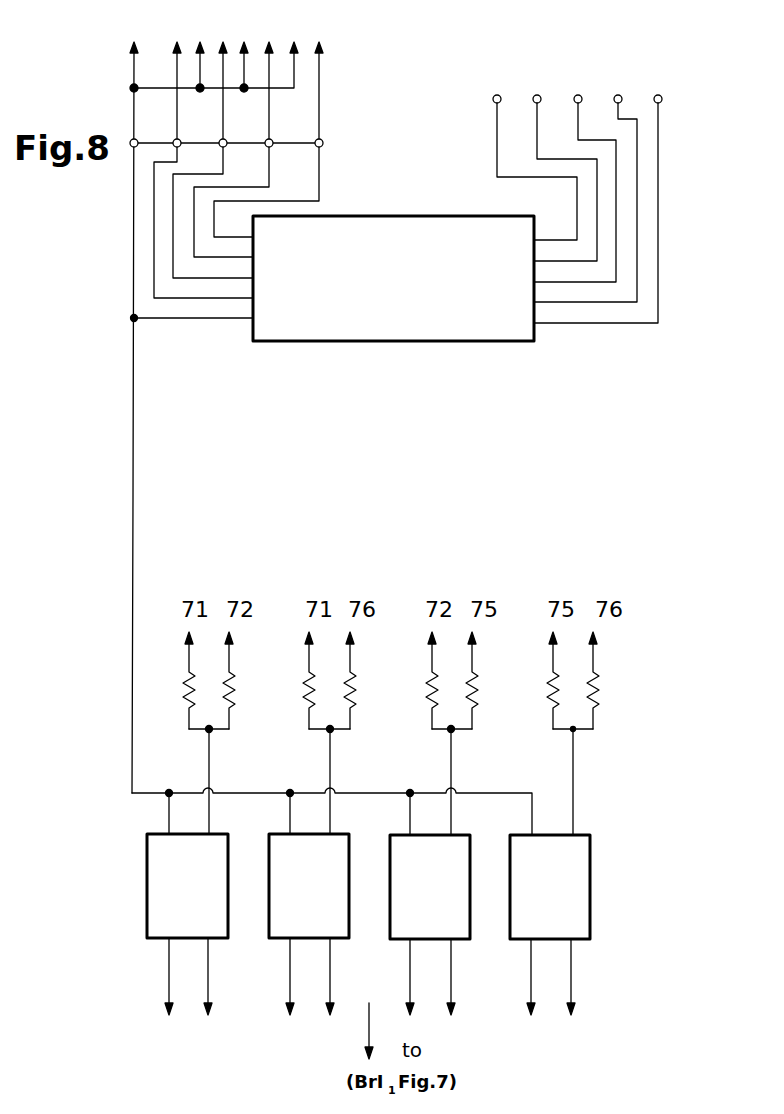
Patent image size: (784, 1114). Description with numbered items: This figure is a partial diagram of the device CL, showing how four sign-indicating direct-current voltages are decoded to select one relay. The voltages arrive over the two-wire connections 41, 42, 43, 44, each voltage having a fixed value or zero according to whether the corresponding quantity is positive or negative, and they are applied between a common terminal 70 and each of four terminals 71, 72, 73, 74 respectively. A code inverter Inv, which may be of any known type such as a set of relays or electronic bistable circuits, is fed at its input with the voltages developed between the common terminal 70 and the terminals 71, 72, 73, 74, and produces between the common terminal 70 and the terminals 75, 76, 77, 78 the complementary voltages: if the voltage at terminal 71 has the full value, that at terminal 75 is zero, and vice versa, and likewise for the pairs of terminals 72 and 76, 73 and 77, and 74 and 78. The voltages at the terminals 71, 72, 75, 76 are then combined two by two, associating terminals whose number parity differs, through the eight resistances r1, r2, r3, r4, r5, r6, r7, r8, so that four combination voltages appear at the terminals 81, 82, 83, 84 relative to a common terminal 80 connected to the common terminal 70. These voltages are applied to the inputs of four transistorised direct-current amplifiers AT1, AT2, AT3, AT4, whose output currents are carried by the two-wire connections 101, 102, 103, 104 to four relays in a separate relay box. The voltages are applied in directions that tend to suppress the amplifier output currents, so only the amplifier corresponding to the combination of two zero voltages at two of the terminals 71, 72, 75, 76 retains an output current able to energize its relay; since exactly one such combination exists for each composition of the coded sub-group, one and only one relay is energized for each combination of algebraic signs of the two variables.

The two-wire connection 41 is at (177, 68).
The two-wire connection 42 is at (232, 62).
The two-wire connection 43 is at (241, 80).
The two-wire connection 44 is at (294, 68).
The common terminal 70 is at (138, 138).
The terminal 71 is at (181, 138).
The terminal 72 is at (226, 147).
The terminal 73 is at (273, 138).
The terminal 74 is at (323, 145).
The terminal 75 is at (620, 95).
The terminal 76 is at (580, 95).
The terminal 77 is at (539, 95).
The terminal 78 is at (499, 95).
The common terminal 80 is at (167, 795).
The terminal 81 is at (212, 733).
The terminal 82 is at (333, 733).
The terminal 83 is at (454, 733).
The terminal 84 is at (576, 733).
The two-wire connection 101 is at (208, 958).
The two-wire connection 102 is at (330, 958).
The two-wire connection 103 is at (451, 960).
The two-wire connection 104 is at (571, 960).
The code inverter Inv is at (383, 216).
The transistorised direct-current amplifier AT1 is at (151, 871).
The transistorised direct-current amplifier AT2 is at (273, 871).
The transistorised direct-current amplifier AT3 is at (394, 871).
The transistorised direct-current amplifier AT4 is at (583, 905).
The resistance r1 is at (182, 697).
The resistance r2 is at (236, 698).
The resistance r3 is at (302, 699).
The resistance r4 is at (356, 698).
The resistance r5 is at (425, 699).
The resistance r6 is at (478, 698).
The resistance r7 is at (546, 699).
The resistance r8 is at (600, 698).